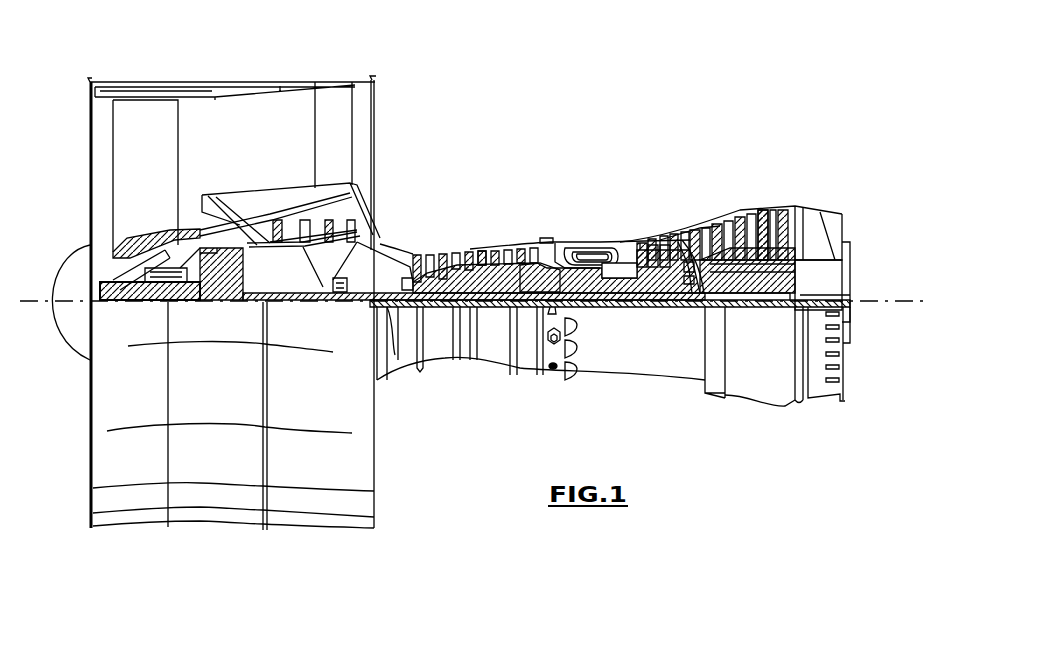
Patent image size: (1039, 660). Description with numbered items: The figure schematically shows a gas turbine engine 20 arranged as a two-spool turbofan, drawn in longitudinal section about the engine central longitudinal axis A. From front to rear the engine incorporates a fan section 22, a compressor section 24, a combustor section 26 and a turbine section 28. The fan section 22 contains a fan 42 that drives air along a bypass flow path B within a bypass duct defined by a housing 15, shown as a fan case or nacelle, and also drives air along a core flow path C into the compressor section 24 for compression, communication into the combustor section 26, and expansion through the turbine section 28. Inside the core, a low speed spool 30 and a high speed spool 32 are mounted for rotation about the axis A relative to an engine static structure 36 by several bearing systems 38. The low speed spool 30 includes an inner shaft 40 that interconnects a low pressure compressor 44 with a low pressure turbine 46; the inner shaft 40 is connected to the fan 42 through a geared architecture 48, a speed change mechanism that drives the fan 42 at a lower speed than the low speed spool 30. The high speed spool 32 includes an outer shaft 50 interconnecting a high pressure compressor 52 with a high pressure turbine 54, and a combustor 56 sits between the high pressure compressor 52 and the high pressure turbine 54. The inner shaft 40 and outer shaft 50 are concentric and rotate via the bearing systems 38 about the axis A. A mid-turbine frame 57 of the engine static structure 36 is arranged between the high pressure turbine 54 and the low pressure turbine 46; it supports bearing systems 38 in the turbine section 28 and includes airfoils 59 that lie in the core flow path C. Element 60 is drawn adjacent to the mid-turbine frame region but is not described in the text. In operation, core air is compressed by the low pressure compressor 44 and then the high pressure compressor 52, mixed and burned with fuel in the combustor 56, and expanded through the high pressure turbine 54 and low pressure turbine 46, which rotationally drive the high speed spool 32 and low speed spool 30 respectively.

The gas turbine engine 20 is at (583, 126).
The fan section 22 is at (175, 76).
The housing 15 is at (232, 82).
The fan 42 is at (229, 306).
The low pressure compressor 44 is at (345, 215).
The compressor section 24 is at (412, 228).
The high pressure compressor 52 is at (484, 250).
The high speed spool 32 is at (526, 264).
The combustor section 26 is at (585, 222).
The combustor 56 is at (588, 256).
The high pressure turbine 54 is at (642, 243).
The mid-turbine frame 57 is at (688, 236).
The airfoils / vanes 60 is at (692, 240).
The turbine section 28 is at (734, 170).
The low pressure turbine 46 is at (755, 210).
The airfoils 59 is at (712, 280).
The bearing systems 38 is at (340, 292).
The geared architecture 48 is at (232, 292).
The outer shaft 50 is at (592, 302).
The inner shaft 40 is at (395, 342).
The low speed spool 30 is at (495, 312).
The engine static structure 36 is at (527, 374).
The engine central longitudinal axis A is at (900, 301).
The bypass flow path B is at (205, 140).
The core flow path C is at (240, 222).